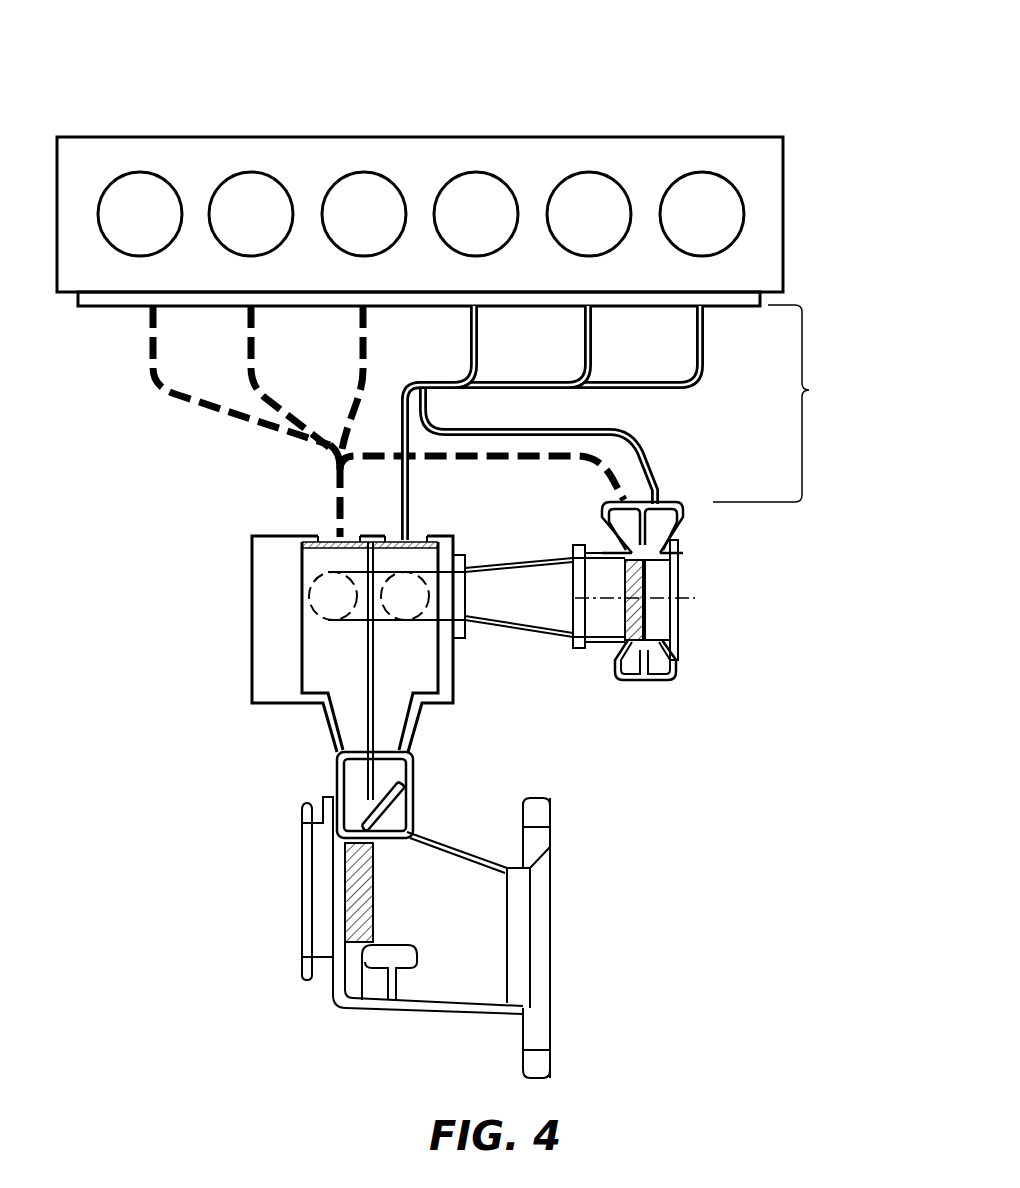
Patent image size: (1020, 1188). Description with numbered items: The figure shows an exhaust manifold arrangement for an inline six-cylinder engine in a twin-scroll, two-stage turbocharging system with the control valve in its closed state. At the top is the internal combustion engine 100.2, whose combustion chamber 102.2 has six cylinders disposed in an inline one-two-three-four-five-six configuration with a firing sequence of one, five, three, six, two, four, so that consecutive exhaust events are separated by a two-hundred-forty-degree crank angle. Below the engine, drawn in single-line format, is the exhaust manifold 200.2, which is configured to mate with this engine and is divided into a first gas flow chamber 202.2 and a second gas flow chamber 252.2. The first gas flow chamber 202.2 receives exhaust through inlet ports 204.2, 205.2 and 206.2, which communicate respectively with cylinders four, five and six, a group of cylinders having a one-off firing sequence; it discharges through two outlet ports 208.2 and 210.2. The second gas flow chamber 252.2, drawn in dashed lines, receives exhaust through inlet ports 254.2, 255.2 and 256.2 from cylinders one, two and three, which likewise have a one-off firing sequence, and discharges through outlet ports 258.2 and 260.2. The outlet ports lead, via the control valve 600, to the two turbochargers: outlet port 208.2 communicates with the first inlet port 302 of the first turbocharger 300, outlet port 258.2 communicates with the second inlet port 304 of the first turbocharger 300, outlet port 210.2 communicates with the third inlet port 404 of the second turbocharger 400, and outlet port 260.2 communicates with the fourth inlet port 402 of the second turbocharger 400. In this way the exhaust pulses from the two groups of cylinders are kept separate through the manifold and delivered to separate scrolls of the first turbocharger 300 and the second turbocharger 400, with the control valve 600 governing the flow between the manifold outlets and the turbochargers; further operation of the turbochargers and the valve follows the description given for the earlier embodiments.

The internal combustion engine 100.2 is at (420, 174).
The combustion chamber 102.2 is at (251, 172).
The exhaust manifold 200.2 is at (812, 390).
The first gas flow chamber 202.2 is at (599, 423).
The inlet port 204.2 is at (470, 323).
The inlet port 205.2 is at (584, 323).
The inlet port 206.2 is at (704, 330).
The outlet port 208.2 is at (652, 476).
The outlet port 210.2 is at (408, 527).
The second gas flow chamber 252.2 is at (313, 431).
The inlet port 254.2 is at (162, 382).
The inlet port 255.2 is at (247, 324).
The inlet port 256.2 is at (359, 324).
The outlet port 258.2 is at (613, 490).
The outlet port 260.2 is at (336, 527).
The first turbocharger 300 is at (612, 624).
The first inlet port 302 is at (683, 518).
The second inlet port 304 is at (603, 516).
The second turbocharger 400 is at (387, 923).
The fourth inlet port 402 is at (345, 777).
The third inlet port 404 is at (405, 778).
The control valve 600 is at (250, 650).